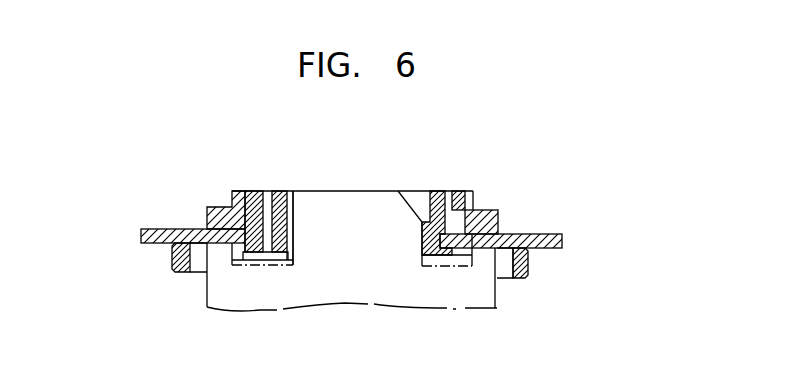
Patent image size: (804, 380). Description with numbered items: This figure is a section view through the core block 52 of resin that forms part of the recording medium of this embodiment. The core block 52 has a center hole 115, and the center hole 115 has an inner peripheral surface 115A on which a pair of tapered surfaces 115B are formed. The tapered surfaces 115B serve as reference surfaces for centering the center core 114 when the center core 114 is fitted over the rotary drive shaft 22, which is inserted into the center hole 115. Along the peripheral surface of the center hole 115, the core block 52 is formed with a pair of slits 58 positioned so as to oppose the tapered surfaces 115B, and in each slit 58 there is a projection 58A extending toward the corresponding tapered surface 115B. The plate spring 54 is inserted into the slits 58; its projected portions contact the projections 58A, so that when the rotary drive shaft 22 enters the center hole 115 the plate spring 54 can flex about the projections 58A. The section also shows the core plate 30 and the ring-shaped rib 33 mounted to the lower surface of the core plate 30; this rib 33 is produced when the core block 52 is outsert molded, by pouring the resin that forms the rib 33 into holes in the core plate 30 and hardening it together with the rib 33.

The rotary drive shaft 22 is at (467, 297).
The core plate 30 is at (562, 240).
The ring-shaped rib 33 is at (528, 262).
The core block 52 is at (212, 205).
The plate spring 54 is at (295, 228).
The slit 58 is at (247, 185).
The projection 58A is at (254, 190).
The center core 114 is at (489, 191).
The center hole 115 is at (407, 192).
The inner peripheral surface 115A is at (418, 198).
The tapered surface 115B is at (408, 218).